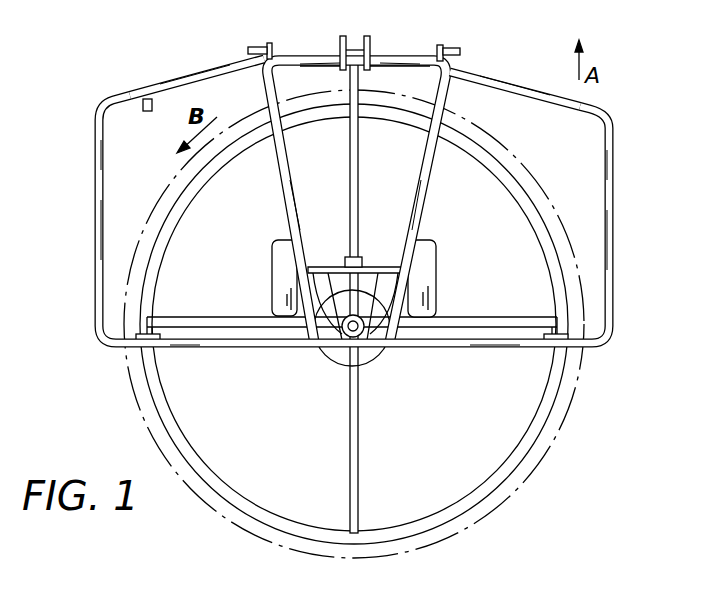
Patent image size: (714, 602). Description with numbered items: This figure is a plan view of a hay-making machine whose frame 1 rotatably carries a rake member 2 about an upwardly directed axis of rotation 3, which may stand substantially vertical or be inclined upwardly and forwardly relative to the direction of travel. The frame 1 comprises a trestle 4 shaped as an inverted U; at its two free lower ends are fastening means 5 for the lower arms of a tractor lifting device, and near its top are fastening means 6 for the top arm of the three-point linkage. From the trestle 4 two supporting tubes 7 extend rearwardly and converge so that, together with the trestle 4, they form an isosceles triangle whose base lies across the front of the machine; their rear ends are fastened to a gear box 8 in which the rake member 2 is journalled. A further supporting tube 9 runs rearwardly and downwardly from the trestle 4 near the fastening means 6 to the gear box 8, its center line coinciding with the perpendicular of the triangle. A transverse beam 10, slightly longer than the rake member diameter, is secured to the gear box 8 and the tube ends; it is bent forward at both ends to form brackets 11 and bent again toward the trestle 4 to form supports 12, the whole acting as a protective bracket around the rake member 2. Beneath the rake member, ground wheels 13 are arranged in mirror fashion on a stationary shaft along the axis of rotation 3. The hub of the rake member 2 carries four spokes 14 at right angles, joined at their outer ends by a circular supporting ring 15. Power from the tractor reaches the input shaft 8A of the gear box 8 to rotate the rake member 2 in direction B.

The frame 1 is at (322, 52).
The rake member 2 is at (139, 418).
The axis of rotation 3 is at (333, 358).
The trestle 4 is at (394, 68).
The fastening means 5 is at (248, 50).
The fastening means 6 is at (347, 37).
The supporting tubes 7 is at (273, 162).
The gear box 8 is at (370, 367).
The input shaft 8A is at (359, 247).
The supporting tube 9 is at (350, 187).
The transverse beam 10 is at (489, 355).
The brackets 11 is at (95, 199).
The supports 12 is at (162, 87).
The ground wheels 13 is at (271, 270).
The spokes 14 is at (536, 317).
The supporting ring 15 is at (441, 513).